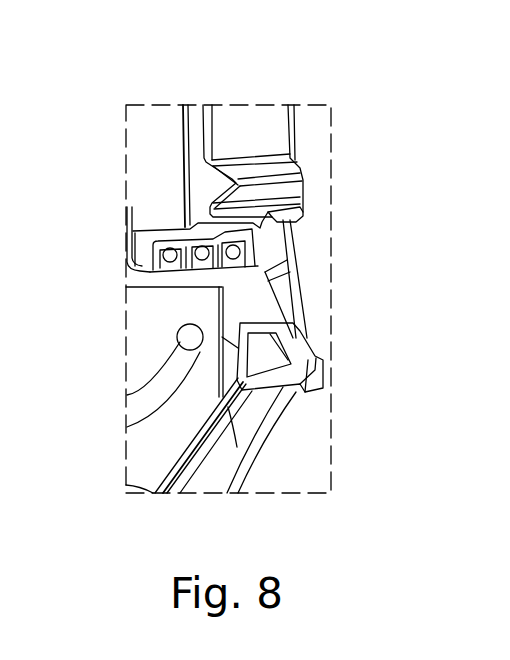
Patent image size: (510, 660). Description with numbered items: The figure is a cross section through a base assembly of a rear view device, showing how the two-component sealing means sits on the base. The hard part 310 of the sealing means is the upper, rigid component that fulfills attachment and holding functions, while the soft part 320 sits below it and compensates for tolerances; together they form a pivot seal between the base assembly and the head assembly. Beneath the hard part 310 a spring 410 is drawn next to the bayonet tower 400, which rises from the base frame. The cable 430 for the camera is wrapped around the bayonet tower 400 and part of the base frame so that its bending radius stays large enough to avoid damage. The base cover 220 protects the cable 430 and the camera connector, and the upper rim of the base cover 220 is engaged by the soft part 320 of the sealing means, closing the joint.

The hard part 310 is at (260, 123).
The spring 410 is at (171, 252).
The bayonet tower 400 is at (150, 333).
The cable 430 is at (142, 407).
The soft part 320 is at (318, 358).
The base cover 220 is at (205, 467).